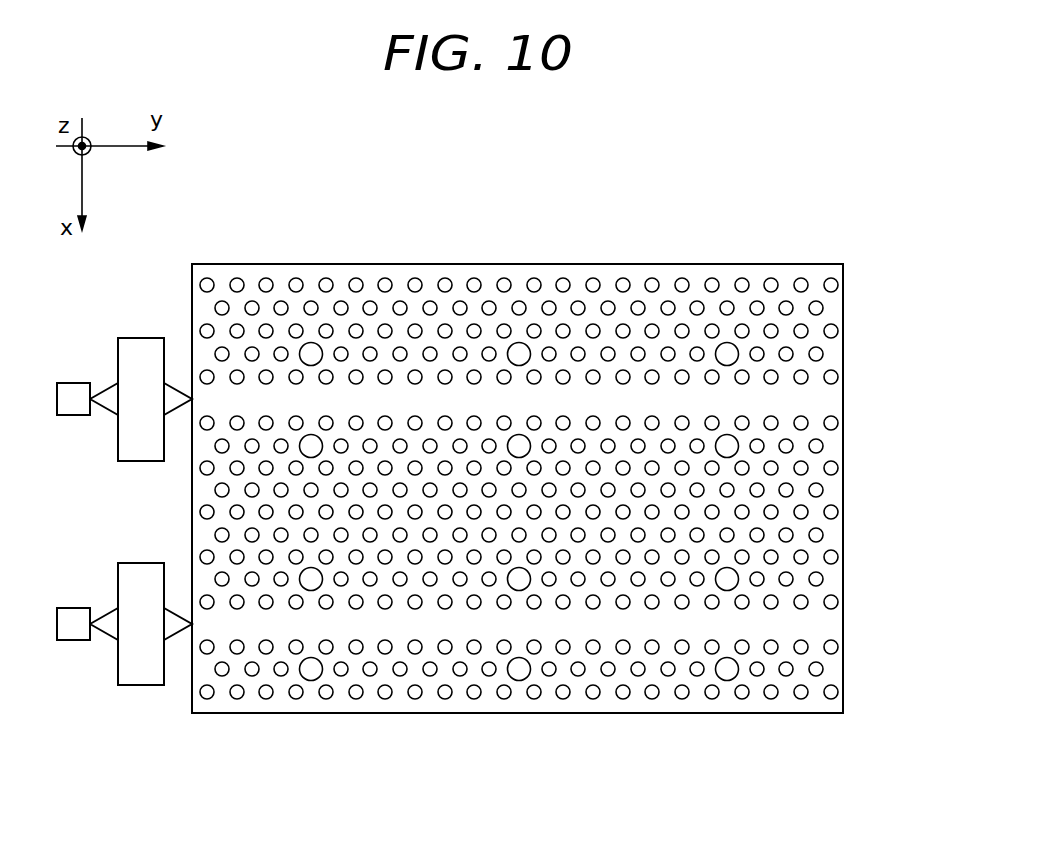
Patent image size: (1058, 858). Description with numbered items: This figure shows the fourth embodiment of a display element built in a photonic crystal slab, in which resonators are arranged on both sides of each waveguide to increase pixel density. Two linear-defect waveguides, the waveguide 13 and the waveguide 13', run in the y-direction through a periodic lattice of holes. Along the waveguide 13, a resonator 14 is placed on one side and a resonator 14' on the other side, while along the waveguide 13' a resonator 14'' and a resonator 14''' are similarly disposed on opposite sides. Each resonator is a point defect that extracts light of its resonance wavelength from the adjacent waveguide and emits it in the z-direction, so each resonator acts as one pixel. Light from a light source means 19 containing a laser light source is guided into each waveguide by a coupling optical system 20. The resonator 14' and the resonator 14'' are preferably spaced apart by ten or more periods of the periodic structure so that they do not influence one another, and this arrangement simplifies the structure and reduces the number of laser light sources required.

The waveguide 13 is at (556, 488).
The waveguide 13' is at (564, 591).
The resonator 14 is at (543, 275).
The resonator 14' is at (578, 329).
The resonator 14'' is at (562, 689).
The resonator 14''' is at (495, 734).
The light source means 19 is at (73, 390).
The coupling optical system 20 is at (142, 350).